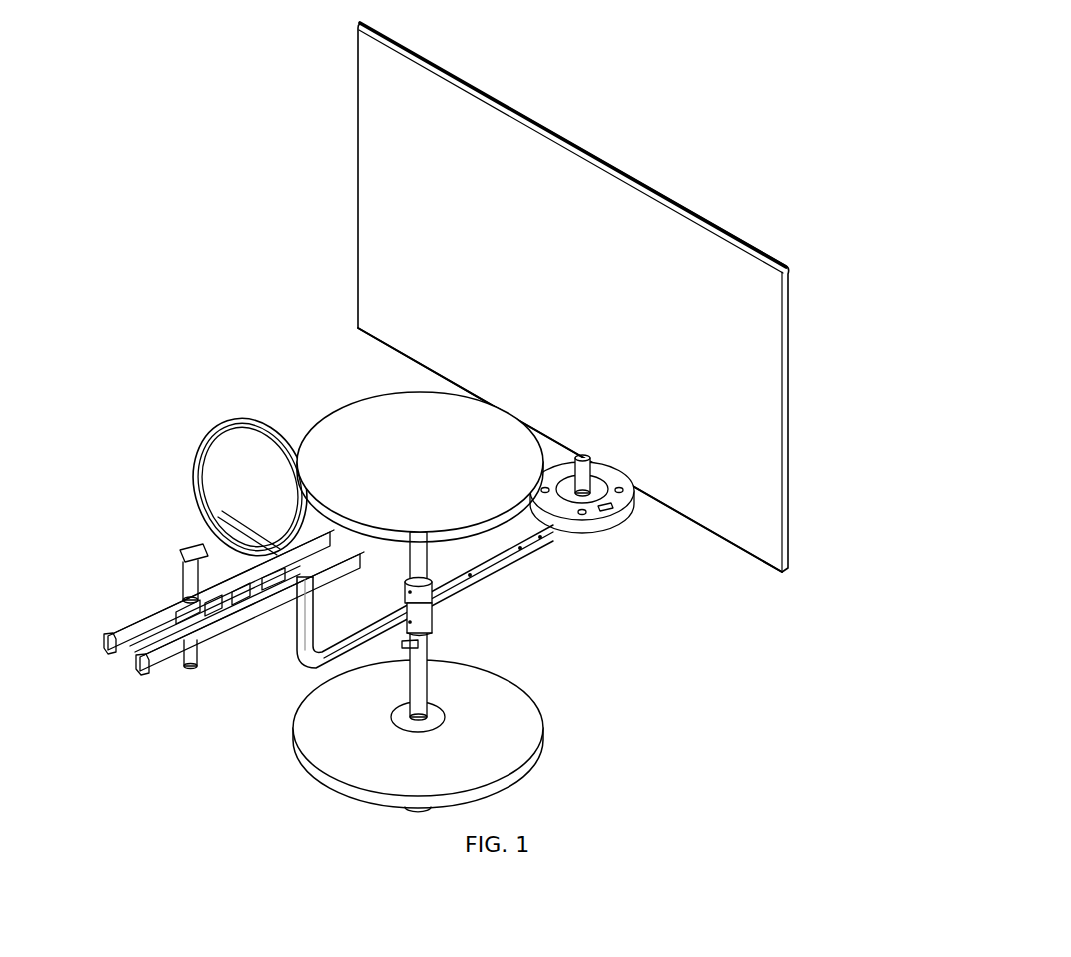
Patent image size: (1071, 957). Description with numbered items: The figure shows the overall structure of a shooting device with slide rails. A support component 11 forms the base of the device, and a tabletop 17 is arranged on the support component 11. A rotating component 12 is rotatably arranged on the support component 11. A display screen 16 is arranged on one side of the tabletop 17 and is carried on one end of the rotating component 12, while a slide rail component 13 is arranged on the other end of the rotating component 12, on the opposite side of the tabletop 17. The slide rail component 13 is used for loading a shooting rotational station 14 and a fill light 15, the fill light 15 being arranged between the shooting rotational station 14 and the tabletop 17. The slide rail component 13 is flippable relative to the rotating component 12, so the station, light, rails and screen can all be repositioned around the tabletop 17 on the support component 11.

The support component 11 is at (538, 711).
The rotating component 12 is at (505, 570).
The slide rail component 13 is at (135, 625).
The shooting rotational station 14 is at (170, 553).
The fill light 15 is at (205, 427).
The display screen 16 is at (792, 337).
The tabletop 17 is at (345, 402).